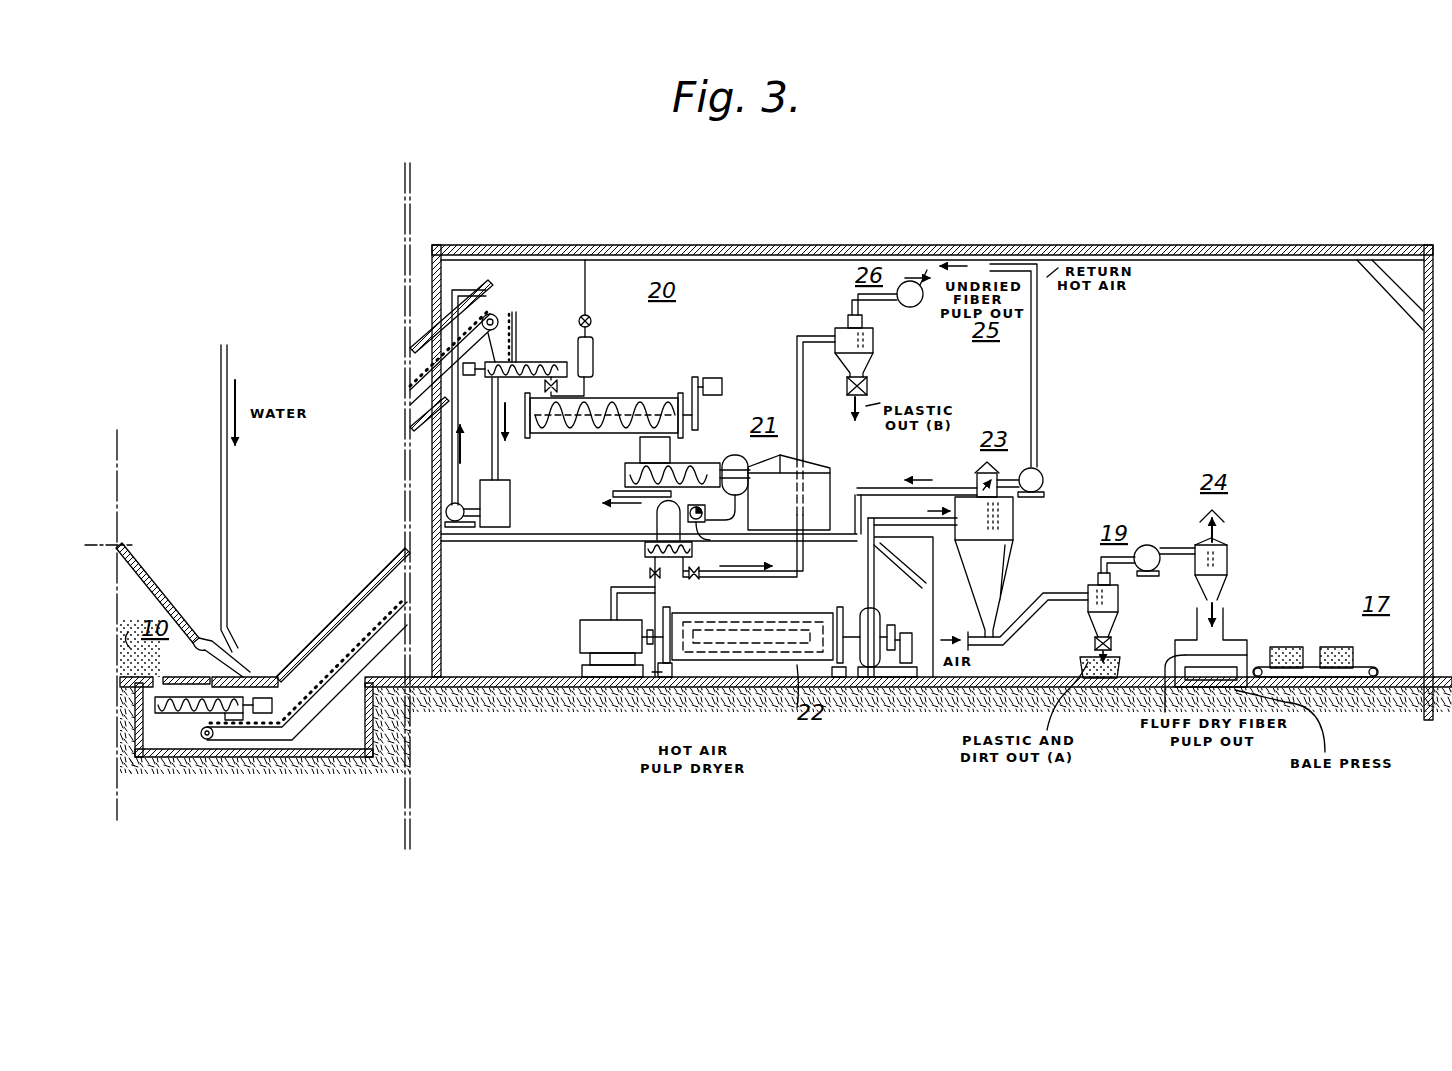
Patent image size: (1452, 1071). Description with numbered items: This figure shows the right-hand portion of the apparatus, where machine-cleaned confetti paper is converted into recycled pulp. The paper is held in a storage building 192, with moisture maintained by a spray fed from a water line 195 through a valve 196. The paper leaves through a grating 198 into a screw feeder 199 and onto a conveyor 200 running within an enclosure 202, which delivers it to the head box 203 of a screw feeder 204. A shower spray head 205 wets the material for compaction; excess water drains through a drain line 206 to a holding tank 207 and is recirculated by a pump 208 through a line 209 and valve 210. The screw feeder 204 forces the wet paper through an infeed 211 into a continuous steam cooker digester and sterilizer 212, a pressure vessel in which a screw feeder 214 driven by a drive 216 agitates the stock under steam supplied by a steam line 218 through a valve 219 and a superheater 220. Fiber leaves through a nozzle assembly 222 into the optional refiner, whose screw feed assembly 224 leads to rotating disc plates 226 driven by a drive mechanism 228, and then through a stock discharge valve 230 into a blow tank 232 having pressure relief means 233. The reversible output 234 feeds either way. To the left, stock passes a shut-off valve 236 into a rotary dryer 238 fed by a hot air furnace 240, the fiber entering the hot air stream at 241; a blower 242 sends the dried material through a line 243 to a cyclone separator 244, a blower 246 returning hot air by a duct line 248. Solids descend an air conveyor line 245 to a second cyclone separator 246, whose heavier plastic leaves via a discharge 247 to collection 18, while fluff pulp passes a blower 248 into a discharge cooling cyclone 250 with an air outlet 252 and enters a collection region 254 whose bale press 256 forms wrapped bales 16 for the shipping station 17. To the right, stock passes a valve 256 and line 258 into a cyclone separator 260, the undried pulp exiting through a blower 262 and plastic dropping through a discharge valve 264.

The recycled paper pulp 16 is at (1335, 647).
The shipping station 17 is at (1315, 672).
The plastic particles 18 is at (1085, 662).
The storage building 192 is at (140, 560).
The water line 195 is at (230, 492).
The valve 196 is at (190, 635).
The grating 198 is at (198, 672).
The screw feeder 199 is at (180, 715).
The conveyor 200 is at (276, 740).
The enclosure 202 is at (370, 590).
The head box 203 is at (516, 320).
The screw feeder 204 is at (510, 365).
The shower spray head 205 is at (508, 292).
The drain line 206 is at (502, 460).
The holding tank 207 is at (502, 487).
The pump 208 is at (472, 555).
The line 209 is at (445, 462).
The valve 210 is at (463, 262).
The infeed 211 is at (547, 388).
The continuous steam cooker digester and sterilizer 212 is at (593, 397).
The screw feeder 214 is at (640, 400).
The drive 216 is at (713, 377).
The steam line 218 is at (608, 265).
The valve 219 is at (591, 321).
The superheater 220 is at (593, 350).
The nozzle assembly 222 is at (640, 452).
The screw feed assembly 224 is at (690, 470).
The disc plates 226 is at (737, 487).
The drive mechanism 228 is at (820, 493).
The stock discharge valve 230 is at (697, 524).
The blow tank 232 is at (657, 518).
The pressure relief means 233 is at (617, 493).
The output 234 is at (645, 551).
The shut-off valve 236 is at (648, 574).
The rotary dryer 238 is at (760, 615).
The hot air furnace 240 is at (588, 620).
The dryer entry 241 is at (652, 650).
The blower 242 is at (878, 668).
The line 243 is at (917, 582).
The cyclone separator 244 is at (1012, 570).
The air conveyor line 245 is at (1058, 577).
The blower / cyclone separator 246 is at (1120, 597).
The discharge 247 is at (1113, 645).
The duct line / blower 248 is at (1150, 545).
The discharge cooling cyclone 250 is at (1232, 585).
The outlet 252 is at (1222, 532).
The collection region 254 is at (1228, 640).
The bale press / valve 256 is at (686, 578).
The line 258 is at (804, 336).
The cyclone separator 260 is at (840, 330).
The blower 262 is at (907, 303).
The discharge valve 264 is at (867, 388).